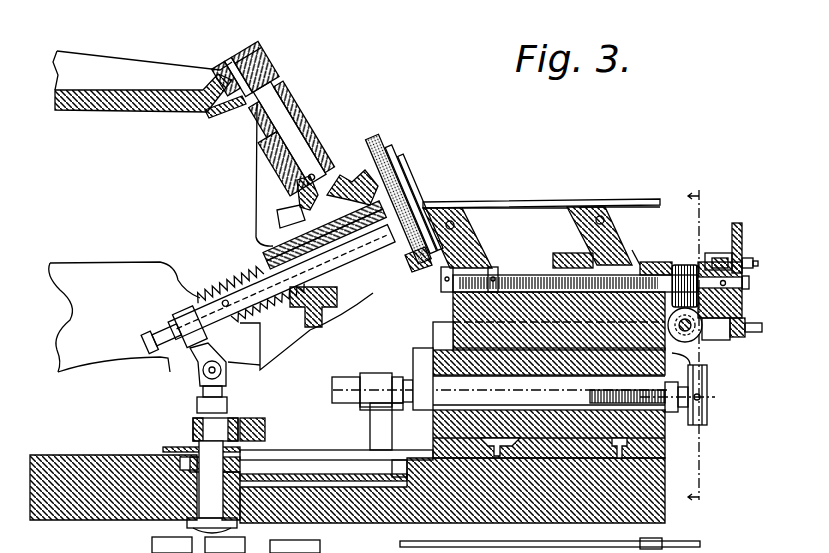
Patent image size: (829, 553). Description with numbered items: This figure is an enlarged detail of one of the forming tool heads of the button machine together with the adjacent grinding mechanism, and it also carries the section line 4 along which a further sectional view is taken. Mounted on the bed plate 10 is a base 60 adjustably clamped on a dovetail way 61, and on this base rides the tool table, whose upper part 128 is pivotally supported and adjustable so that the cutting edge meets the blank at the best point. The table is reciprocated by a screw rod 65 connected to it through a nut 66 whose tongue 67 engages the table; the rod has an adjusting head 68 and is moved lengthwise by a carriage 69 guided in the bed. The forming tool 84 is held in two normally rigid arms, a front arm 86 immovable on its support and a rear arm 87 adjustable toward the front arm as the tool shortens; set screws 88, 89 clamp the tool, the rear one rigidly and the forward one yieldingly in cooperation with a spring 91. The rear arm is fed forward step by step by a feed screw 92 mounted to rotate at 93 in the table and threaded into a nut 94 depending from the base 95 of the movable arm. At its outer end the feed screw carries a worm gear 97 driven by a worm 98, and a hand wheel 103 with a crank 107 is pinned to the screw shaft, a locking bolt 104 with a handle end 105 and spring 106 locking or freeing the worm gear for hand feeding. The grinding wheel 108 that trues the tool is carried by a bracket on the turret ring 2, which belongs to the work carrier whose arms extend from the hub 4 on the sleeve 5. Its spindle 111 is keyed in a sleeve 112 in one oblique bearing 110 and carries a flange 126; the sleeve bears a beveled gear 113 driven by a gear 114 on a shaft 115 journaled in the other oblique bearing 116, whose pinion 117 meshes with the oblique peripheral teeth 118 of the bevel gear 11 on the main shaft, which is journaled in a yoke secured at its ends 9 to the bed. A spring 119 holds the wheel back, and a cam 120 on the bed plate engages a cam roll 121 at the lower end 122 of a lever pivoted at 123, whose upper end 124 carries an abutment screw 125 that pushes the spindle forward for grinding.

The ring 2 is at (338, 312).
The hub 4 is at (701, 345).
The sleeve 5 is at (58, 356).
The ends of yoke 9 is at (256, 180).
The bed plate 10 is at (640, 510).
The bevel gear 11 is at (120, 100).
The base 60 is at (630, 448).
The dovetail way 61 is at (555, 445).
The screw rod 65 is at (433, 338).
The nut 66 is at (680, 410).
The tongue 67 is at (682, 342).
The adjusting head 68 is at (707, 383).
The carriage 69 is at (370, 430).
The tool 84 is at (520, 201).
The front arm 86 is at (485, 248).
The rear arm 87 is at (590, 205).
The set screw 88 is at (617, 212).
The set screw 89 is at (470, 213).
The spring 91 is at (228, 524).
The feed screw 92 is at (540, 277).
The rotary mounting 93 is at (570, 262).
The nut 94 is at (705, 262).
The base of movable arm 95 is at (441, 282).
The worm gear 97 is at (690, 265).
The worm 98 is at (715, 340).
The hand wheel 103 is at (748, 257).
The locking bolt 104 is at (717, 255).
The handle end 105 is at (750, 283).
The spring 106 is at (737, 223).
The crank 107 is at (752, 323).
The grinding wheel 108 is at (381, 140).
The bearing 110 is at (300, 237).
The spindle 111 is at (262, 300).
The sleeve 112 is at (265, 253).
The beveled gear 113 is at (418, 262).
The gear 114 is at (296, 210).
The shaft 115 is at (297, 115).
The bearing 116 is at (285, 95).
The pinion 117 is at (262, 52).
The oblique peripheral gear teeth 118 is at (228, 65).
The spring 119 is at (232, 282).
The cam 120 is at (255, 420).
The cam roll 121 is at (410, 185).
The lower end of lever 122 is at (200, 405).
The lever pivot 123 is at (202, 372).
The upper end of lever 124 is at (190, 310).
The abutment screw 125 is at (150, 340).
The flange 126 is at (395, 165).
The upper part of tool carriage 128 is at (455, 305).